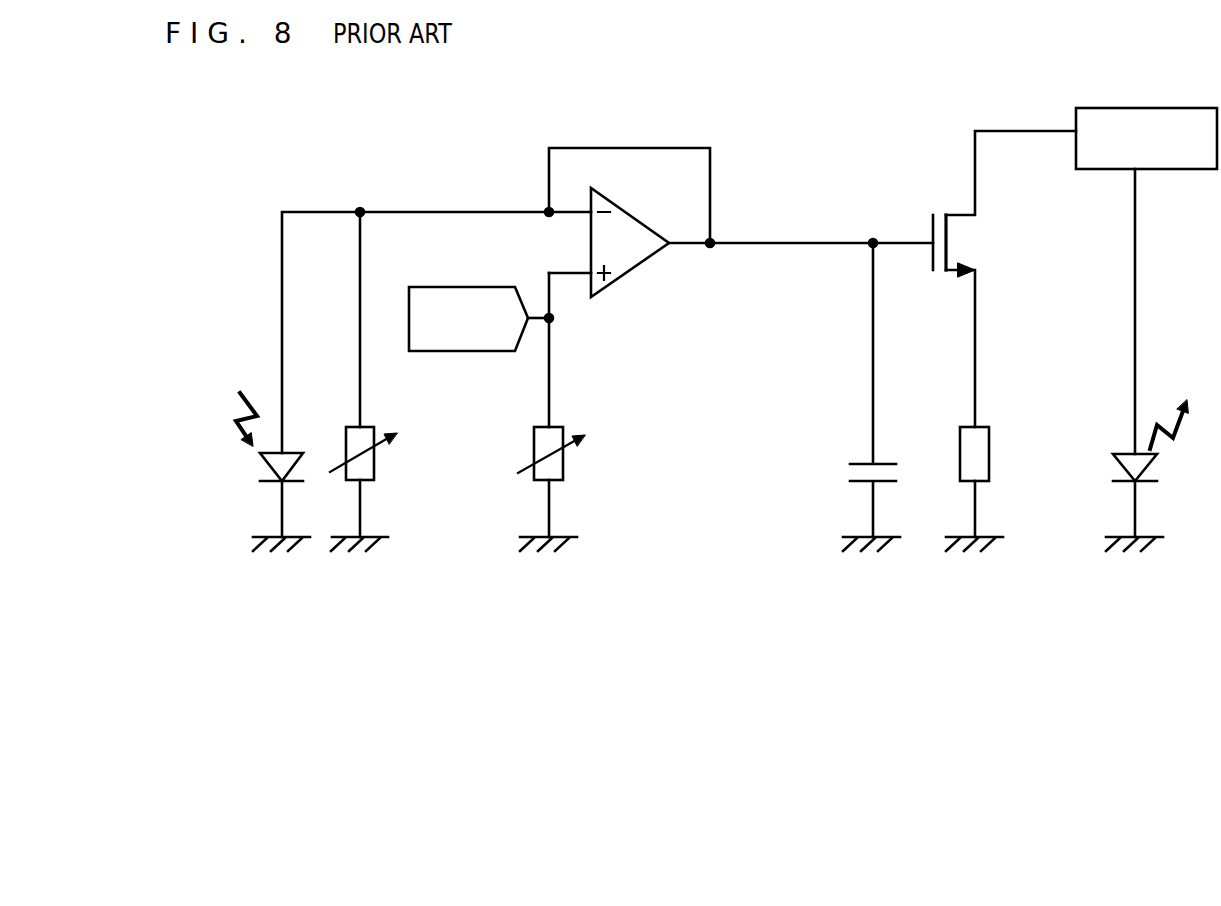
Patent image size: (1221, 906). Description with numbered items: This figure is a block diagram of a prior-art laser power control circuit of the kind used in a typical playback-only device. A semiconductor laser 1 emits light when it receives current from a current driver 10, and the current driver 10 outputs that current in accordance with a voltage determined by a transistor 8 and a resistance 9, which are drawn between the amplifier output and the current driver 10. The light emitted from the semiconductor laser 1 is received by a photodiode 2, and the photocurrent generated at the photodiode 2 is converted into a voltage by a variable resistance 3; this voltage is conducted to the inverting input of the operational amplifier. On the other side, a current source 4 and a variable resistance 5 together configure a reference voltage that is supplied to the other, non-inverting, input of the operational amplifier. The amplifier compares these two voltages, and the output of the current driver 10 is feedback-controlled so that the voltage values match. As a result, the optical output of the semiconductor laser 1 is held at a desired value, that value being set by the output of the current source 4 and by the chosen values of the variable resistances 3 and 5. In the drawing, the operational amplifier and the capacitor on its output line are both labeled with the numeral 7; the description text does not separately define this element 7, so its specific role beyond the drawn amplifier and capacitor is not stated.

The semiconductor laser 1 is at (1147, 483).
The photodiode 2 is at (267, 483).
The variable resistance 3 is at (367, 425).
The current source 4 is at (465, 285).
The variable resistance 5 is at (558, 427).
The operational amplifier / capacitor 7 is at (637, 216).
The transistor 8 is at (930, 263).
The resistance 9 is at (989, 457).
The current driver 10 is at (1128, 104).